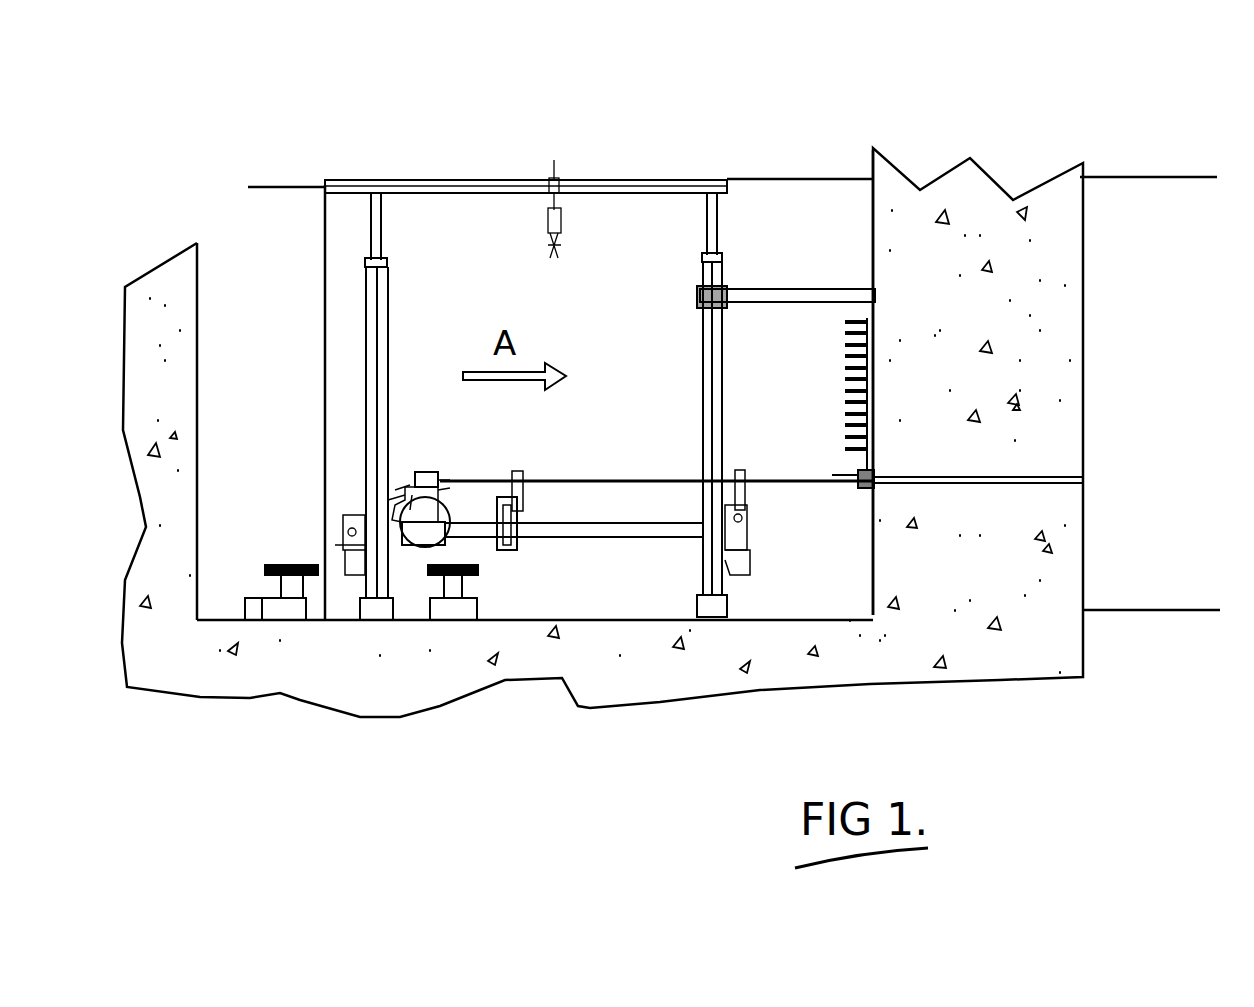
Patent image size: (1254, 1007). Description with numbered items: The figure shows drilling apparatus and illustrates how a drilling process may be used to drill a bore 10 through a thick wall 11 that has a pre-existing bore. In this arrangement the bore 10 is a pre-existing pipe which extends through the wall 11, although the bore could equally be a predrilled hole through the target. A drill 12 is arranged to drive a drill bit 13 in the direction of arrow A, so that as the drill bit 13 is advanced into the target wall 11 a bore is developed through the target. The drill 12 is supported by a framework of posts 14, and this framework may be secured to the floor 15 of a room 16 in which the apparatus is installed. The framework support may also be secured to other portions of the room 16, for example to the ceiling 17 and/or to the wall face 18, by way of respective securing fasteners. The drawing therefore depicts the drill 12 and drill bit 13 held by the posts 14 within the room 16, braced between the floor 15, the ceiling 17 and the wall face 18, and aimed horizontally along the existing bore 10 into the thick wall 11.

The bore 10 is at (1082, 457).
The wall 11 is at (972, 592).
The drill 12 is at (430, 470).
The drill bit 13 is at (566, 476).
The posts 14 is at (368, 348).
The floor 15 is at (543, 612).
The room 16 is at (645, 250).
The ceiling 17 is at (775, 178).
The wall face 18 is at (870, 228).